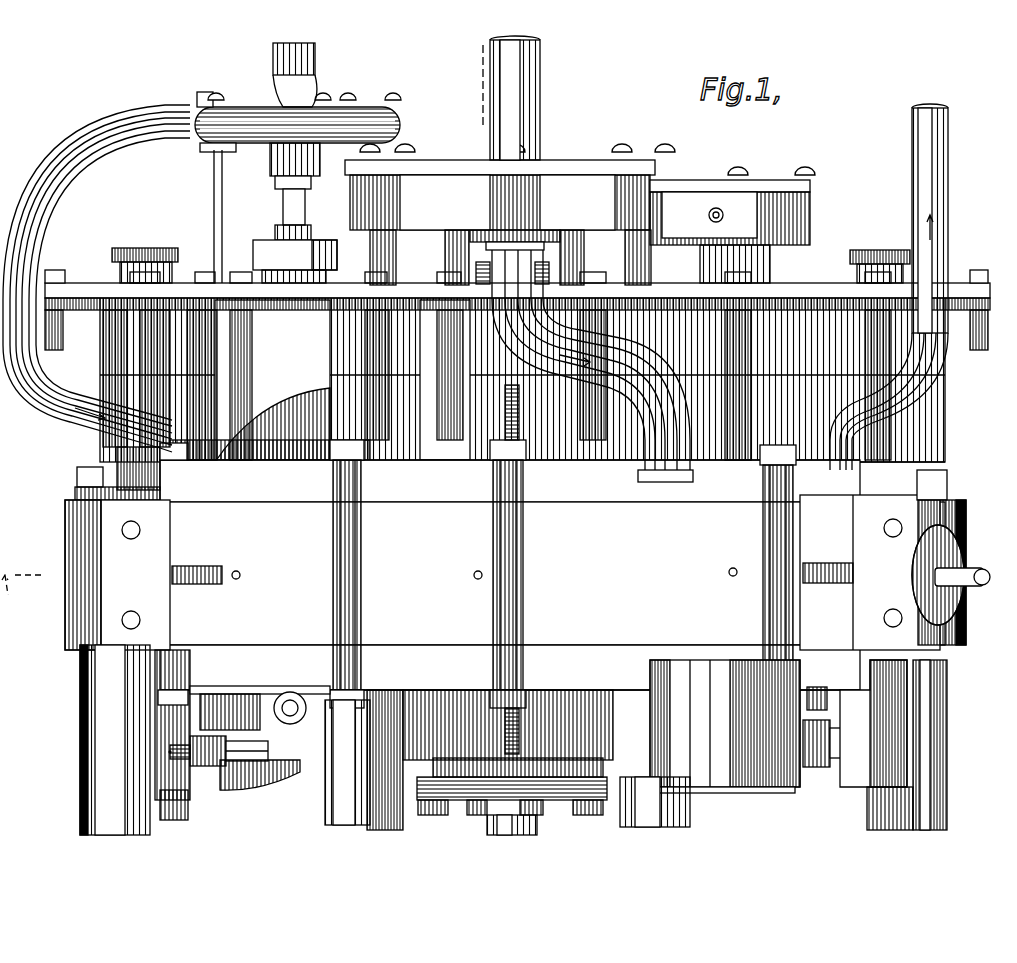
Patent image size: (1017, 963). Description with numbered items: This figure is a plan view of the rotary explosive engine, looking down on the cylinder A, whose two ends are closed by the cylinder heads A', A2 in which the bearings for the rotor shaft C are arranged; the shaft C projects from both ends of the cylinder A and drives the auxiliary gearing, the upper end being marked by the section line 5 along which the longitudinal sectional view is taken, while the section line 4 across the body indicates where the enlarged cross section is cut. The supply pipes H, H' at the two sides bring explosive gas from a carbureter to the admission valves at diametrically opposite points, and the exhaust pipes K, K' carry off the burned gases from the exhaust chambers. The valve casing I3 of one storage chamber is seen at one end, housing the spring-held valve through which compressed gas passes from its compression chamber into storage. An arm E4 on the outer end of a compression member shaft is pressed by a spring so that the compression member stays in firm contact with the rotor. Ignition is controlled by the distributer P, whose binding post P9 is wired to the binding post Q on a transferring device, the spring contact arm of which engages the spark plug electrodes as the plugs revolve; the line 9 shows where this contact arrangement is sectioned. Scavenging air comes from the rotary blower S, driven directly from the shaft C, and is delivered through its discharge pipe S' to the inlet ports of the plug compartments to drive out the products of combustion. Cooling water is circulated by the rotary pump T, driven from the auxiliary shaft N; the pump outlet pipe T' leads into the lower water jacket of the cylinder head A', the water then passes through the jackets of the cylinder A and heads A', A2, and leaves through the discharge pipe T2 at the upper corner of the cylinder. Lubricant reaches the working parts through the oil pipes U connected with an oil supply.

The cylinder A is at (510, 493).
The cylinder head A' is at (510, 478).
The cylinder head A2 is at (510, 671).
The rotary pump T is at (298, 97).
The outlet pipe T' is at (96, 278).
The discharge pipe T2 is at (889, 287).
The auxiliary shaft N is at (285, 196).
The rotary blower S is at (510, 210).
The discharge pipe S' is at (580, 366).
The shaft C is at (540, 95).
The section line 5— 5 is at (475, 55).
The distributer P is at (732, 219).
The binding post P9 is at (712, 220).
The oil pipes U is at (240, 575).
The valve casing I3 is at (925, 560).
The section line 4— 4 is at (1005, 582).
The supply pipe H is at (98, 740).
The supply pipe H' is at (922, 745).
The exhaust pipe K is at (666, 802).
The exhaust pipe K' is at (351, 760).
The binding post Q is at (205, 767).
The arm E4 is at (298, 696).
The section line 9— 9 is at (229, 750).